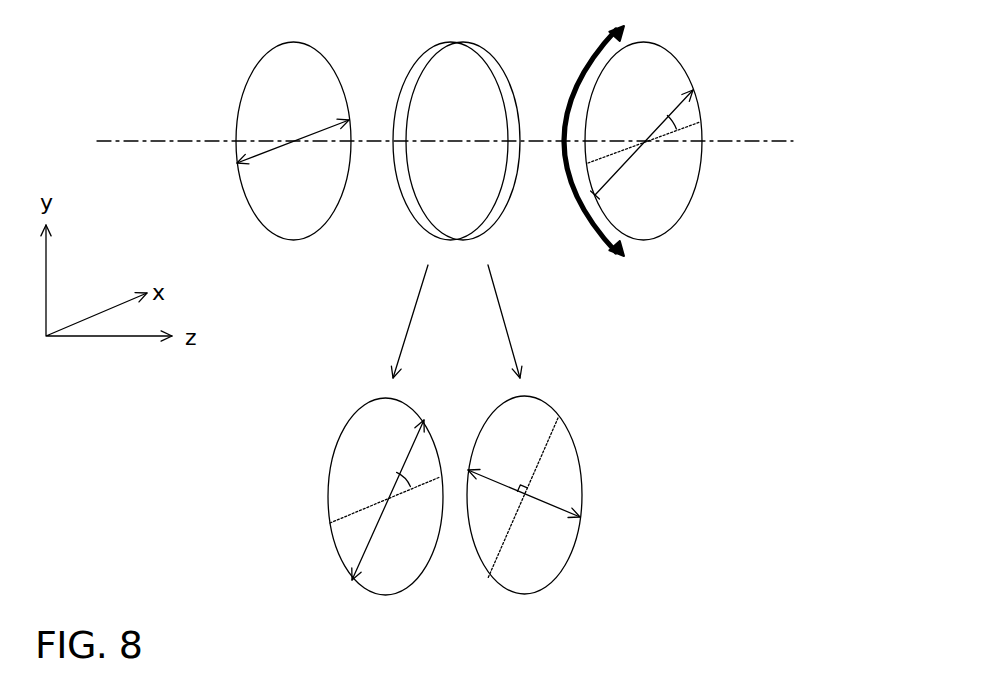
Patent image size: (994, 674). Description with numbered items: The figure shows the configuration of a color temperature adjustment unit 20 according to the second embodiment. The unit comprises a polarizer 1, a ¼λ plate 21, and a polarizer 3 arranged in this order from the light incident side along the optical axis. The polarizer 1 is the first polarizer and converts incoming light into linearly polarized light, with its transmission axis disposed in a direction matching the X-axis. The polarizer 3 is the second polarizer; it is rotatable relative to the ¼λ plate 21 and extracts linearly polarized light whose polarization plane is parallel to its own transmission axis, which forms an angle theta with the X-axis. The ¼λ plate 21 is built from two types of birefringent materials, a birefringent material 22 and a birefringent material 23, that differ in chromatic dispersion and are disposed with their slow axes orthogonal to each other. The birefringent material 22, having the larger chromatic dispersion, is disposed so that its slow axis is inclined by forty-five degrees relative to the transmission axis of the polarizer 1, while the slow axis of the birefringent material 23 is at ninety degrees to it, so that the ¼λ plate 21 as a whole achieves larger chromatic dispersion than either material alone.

The color temperature adjustment unit 20 is at (80, 36).
The polarizer 1 is at (254, 72).
The ¼λ plate 21 is at (413, 58).
The polarizer 3 is at (658, 43).
The birefringent material 22 is at (338, 444).
The birefringent material 23 is at (580, 467).